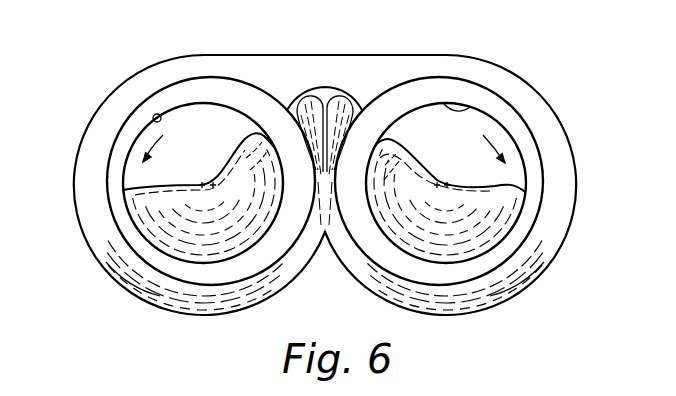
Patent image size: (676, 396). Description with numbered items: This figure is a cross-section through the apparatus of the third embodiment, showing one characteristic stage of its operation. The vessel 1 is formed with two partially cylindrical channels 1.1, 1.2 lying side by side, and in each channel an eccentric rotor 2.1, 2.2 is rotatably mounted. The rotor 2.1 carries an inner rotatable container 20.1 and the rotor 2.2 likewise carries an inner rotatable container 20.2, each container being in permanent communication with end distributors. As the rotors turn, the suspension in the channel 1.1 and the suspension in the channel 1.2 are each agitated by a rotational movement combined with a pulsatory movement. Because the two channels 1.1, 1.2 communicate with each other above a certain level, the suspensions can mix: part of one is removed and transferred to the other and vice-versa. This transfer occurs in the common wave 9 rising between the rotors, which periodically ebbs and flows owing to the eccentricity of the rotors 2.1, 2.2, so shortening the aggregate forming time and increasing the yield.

The vessel 1 is at (564, 108).
The partially cylindrical channel 1.1 is at (142, 298).
The partially cylindrical channel 1.2 is at (510, 299).
The eccentric rotor 2.1 is at (164, 84).
The eccentric rotor 2.2 is at (465, 75).
The common wave 9 is at (334, 88).
The inner rotatable container 20.1 is at (154, 116).
The inner rotatable container 20.2 is at (463, 108).